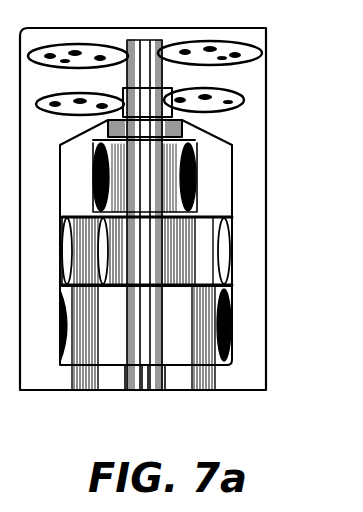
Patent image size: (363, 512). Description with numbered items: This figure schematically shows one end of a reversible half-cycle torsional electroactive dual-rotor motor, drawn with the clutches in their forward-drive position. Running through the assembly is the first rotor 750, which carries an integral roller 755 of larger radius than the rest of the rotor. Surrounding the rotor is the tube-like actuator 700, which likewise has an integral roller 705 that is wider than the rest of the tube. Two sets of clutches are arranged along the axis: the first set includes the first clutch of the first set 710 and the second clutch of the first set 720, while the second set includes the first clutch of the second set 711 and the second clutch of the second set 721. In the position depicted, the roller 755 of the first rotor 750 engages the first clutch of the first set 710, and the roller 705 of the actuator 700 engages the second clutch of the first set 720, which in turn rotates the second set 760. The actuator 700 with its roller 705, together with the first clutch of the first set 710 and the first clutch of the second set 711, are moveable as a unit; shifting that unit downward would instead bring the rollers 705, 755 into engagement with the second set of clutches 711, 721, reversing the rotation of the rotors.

The actuator 700 is at (193, 381).
The roller 705 is at (232, 284).
The first clutch of the first set 710 is at (187, 257).
The first clutch of the second set 711 is at (197, 157).
The second clutch of the first set 720 is at (228, 240).
The second clutch of the second set 721 is at (230, 325).
The first rotor 750 is at (152, 378).
The roller 755 is at (145, 242).
The second set 760 is at (232, 350).